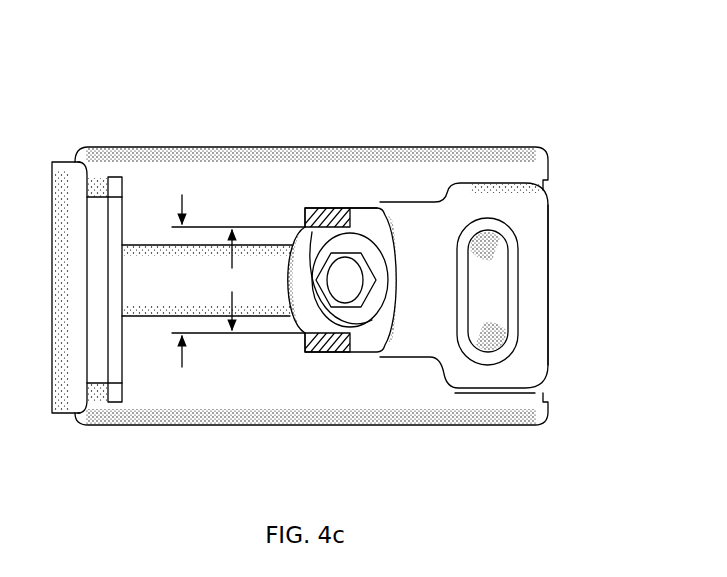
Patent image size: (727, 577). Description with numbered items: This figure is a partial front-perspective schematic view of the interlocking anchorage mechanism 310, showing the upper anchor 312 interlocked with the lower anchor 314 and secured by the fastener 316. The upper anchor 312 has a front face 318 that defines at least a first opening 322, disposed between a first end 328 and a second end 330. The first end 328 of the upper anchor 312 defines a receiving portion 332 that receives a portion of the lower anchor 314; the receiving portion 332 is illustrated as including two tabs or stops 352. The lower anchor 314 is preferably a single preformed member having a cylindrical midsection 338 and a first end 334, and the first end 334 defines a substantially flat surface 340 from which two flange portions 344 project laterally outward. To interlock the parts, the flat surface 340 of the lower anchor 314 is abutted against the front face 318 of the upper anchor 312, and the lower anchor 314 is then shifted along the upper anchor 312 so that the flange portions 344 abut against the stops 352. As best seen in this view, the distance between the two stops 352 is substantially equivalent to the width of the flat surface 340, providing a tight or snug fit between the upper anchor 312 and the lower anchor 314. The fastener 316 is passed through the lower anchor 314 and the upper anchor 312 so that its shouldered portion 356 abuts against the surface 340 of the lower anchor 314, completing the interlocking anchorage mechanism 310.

The interlocking anchorage mechanism 310 is at (342, 242).
The upper anchor 312 is at (484, 96).
The lower anchor 314 is at (189, 88).
The fastener 316 is at (350, 273).
The front face 318 is at (506, 278).
The first opening 322 is at (500, 250).
The first end 328 is at (302, 341).
The second end 330 is at (554, 340).
The receiving portion 332 is at (356, 181).
The first end 334 is at (403, 278).
The cylindrical midsection 338 is at (149, 208).
The substantially flat surface 340 is at (323, 322).
The flange portions 344 is at (388, 221).
The stops 352 is at (303, 213).
The shouldered portion 356 is at (371, 300).